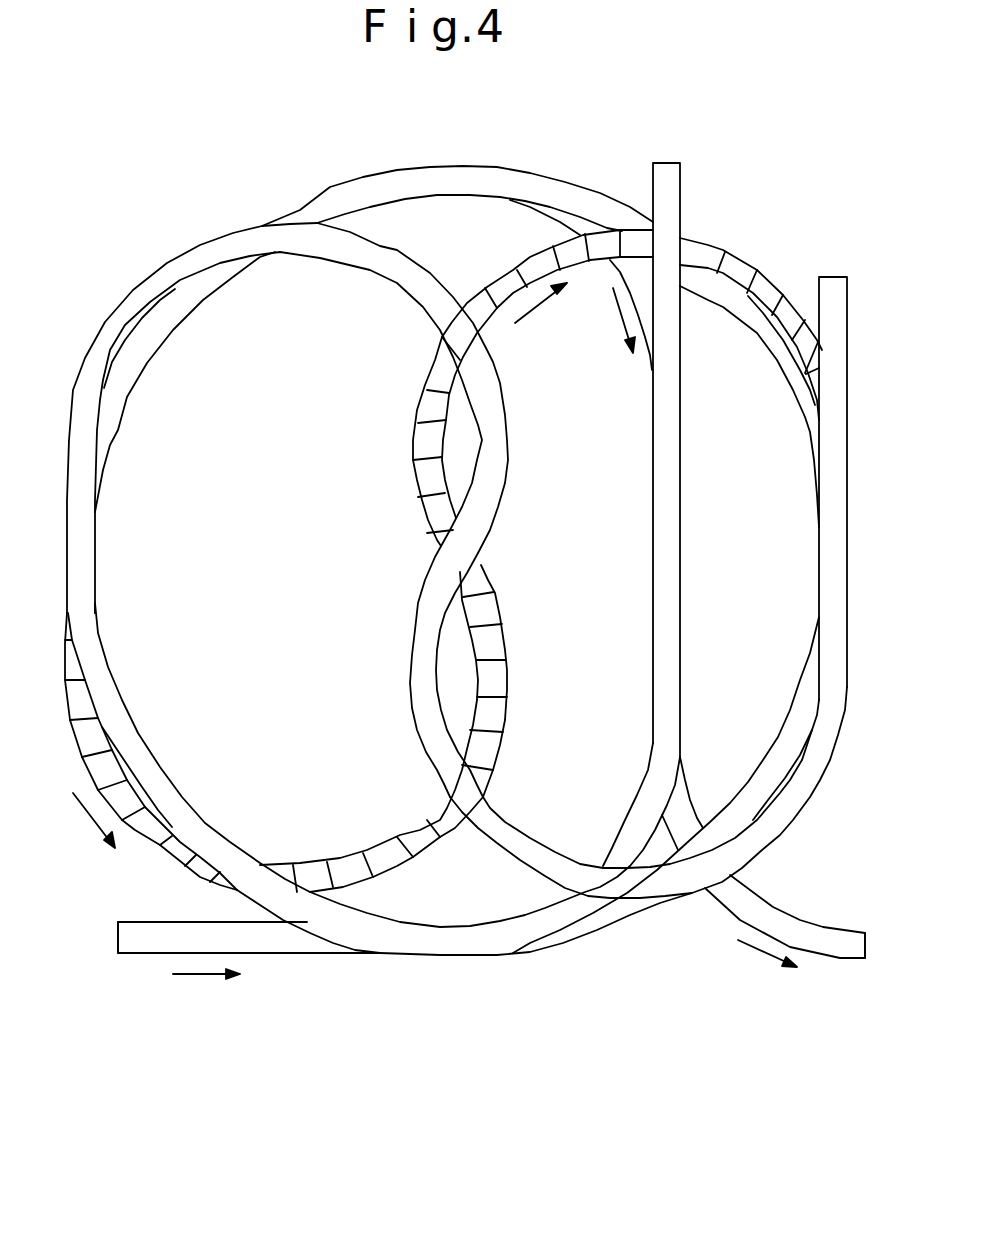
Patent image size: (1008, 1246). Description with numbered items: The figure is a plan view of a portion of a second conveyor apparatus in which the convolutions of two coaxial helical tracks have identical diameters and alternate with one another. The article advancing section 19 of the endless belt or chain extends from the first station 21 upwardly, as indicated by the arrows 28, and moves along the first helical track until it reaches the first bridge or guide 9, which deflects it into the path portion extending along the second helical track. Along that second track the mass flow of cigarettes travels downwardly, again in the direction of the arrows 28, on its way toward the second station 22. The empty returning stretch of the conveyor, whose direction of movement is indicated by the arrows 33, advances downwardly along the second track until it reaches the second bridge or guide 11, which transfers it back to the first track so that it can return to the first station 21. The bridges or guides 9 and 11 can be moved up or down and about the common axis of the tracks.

The first bridge or guide 9 is at (405, 440).
The second bridge or guide 11 is at (405, 681).
The article advancing section 19 is at (290, 940).
The first station 21 is at (130, 990).
The second station 22 is at (850, 985).
The arrows 28 is at (427, 652).
The arrows 33 is at (697, 160).